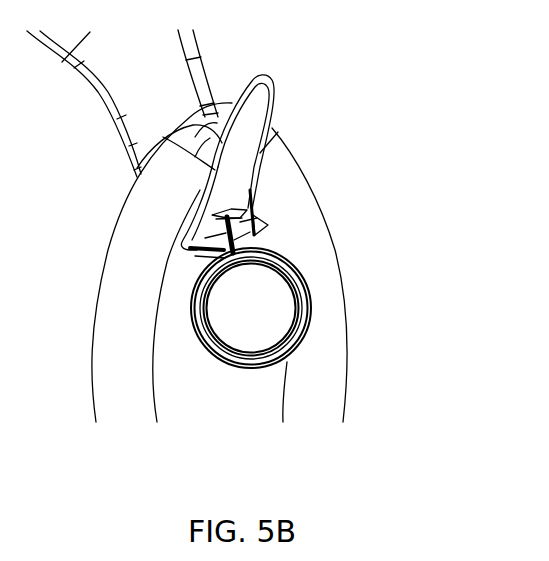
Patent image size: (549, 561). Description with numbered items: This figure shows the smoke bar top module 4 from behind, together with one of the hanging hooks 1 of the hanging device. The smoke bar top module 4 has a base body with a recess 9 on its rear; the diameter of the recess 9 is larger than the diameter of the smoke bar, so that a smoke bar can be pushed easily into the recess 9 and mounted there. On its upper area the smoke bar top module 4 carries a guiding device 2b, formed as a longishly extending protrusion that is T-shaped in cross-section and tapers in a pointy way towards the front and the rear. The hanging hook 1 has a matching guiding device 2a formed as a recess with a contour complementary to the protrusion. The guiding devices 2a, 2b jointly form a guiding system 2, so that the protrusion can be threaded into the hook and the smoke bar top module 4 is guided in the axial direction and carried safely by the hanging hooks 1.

The hanging hook 1 is at (277, 87).
The guiding system 2 is at (260, 216).
The guiding device 2a is at (200, 228).
The guiding device 2b is at (210, 249).
The smoke bar top module 4 is at (311, 283).
The recess 9 is at (224, 338).